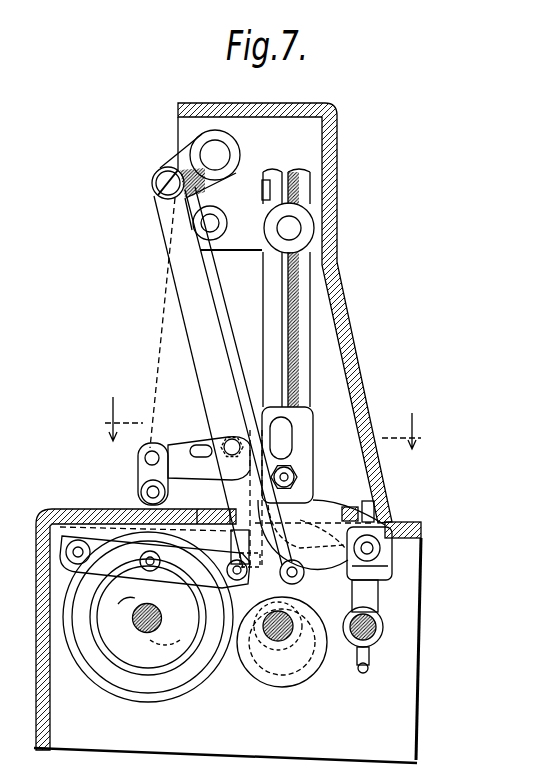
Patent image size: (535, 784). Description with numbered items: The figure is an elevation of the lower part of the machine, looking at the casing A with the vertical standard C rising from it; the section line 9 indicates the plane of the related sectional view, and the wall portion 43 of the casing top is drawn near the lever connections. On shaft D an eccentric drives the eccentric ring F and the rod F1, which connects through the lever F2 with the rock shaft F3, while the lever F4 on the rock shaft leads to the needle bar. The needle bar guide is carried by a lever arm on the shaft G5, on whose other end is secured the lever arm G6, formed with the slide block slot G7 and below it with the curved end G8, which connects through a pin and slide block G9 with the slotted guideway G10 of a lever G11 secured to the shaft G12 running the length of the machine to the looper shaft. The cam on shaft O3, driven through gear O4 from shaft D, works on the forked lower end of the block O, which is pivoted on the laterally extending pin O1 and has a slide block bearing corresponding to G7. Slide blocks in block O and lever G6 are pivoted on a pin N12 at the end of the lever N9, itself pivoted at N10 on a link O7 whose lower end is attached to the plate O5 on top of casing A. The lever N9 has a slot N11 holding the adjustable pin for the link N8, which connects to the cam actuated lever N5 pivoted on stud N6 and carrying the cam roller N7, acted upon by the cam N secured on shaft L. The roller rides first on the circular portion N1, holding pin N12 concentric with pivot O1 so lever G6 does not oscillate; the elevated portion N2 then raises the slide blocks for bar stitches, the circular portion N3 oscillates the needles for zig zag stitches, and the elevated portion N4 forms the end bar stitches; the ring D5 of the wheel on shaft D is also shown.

The vertical standard C is at (350, 343).
The pin and slide block G9 is at (388, 525).
The casing A is at (42, 622).
The wall portion 43 is at (213, 519).
The lever arm G6 is at (300, 297).
The shaft G5 is at (302, 228).
The block O is at (303, 413).
The slide block slot G7 is at (310, 442).
The pin N12 is at (296, 476).
The plate O5 is at (347, 513).
The gear O4 is at (322, 575).
The shaft O3 is at (286, 582).
The pin O1 is at (275, 576).
The curved end G8 is at (354, 549).
The slotted guideway G10 is at (372, 572).
The lever G11 is at (378, 603).
The shaft G12 is at (383, 632).
The cam N is at (92, 681).
The cam path portion N3 is at (100, 640).
The elevated cam path portion N2 is at (77, 584).
The shaft L is at (136, 636).
The elevated cam path portion N4 is at (152, 631).
The circular cam portion N1 is at (136, 595).
The eccentric ring F is at (316, 675).
The disk ring D5 is at (272, 678).
The shaft D is at (266, 637).
The cam actuated lever N5 is at (110, 537).
The stud N6 is at (72, 544).
The cam roller N7 is at (143, 556).
The link N8 is at (228, 555).
The lever N9 is at (190, 444).
The pivot N10 is at (140, 468).
The link O7 is at (145, 458).
The slot N11 is at (192, 483).
The lever F2 is at (190, 158).
The rock shaft F3 is at (223, 153).
The rod F1 is at (238, 372).
The lever F4 is at (243, 438).
The section line 9 is at (266, 417).